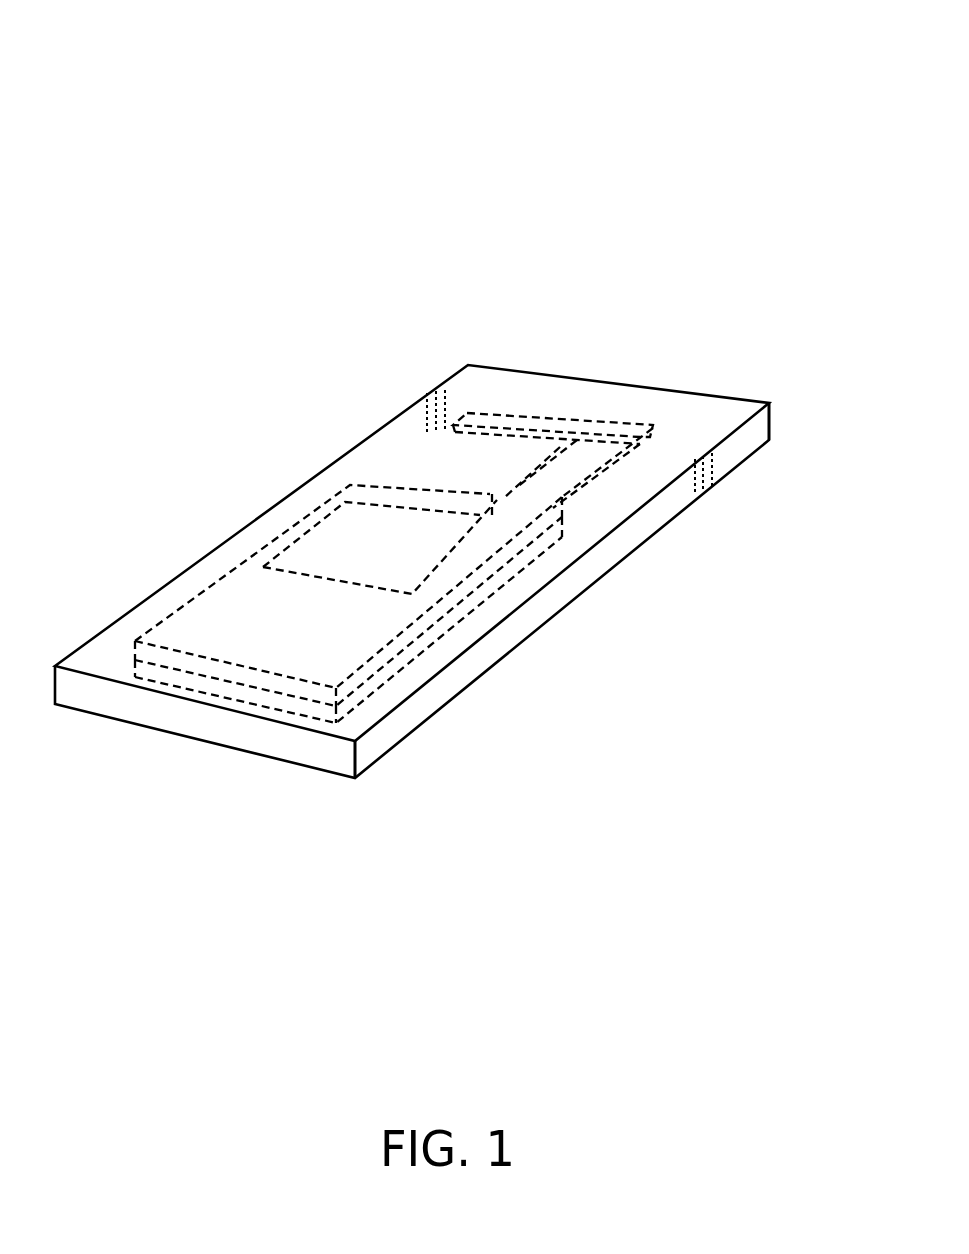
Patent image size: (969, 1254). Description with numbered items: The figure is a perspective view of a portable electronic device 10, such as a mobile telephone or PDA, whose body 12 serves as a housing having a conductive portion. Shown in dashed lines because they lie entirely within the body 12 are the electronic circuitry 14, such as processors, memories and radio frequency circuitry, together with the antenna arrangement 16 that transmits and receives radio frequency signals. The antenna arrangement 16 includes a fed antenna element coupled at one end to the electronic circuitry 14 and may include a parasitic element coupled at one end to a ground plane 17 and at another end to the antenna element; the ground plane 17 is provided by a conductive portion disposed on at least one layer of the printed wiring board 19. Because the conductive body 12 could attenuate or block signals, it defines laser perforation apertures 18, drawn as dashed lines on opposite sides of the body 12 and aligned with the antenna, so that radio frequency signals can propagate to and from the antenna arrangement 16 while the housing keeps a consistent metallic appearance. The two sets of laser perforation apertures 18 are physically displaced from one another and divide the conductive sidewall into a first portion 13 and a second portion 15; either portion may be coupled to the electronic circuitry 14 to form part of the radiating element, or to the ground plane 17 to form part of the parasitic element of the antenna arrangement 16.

The portable electronic device 10 is at (515, 97).
The body 12 is at (440, 688).
The first portion 13 is at (771, 428).
The electronic circuitry 14 is at (350, 550).
The second portion 15 is at (357, 745).
The antenna arrangement 16 is at (610, 420).
The ground plane 17 is at (463, 607).
The laser perforation apertures 18 is at (433, 393).
The printed wiring board 19 is at (513, 550).